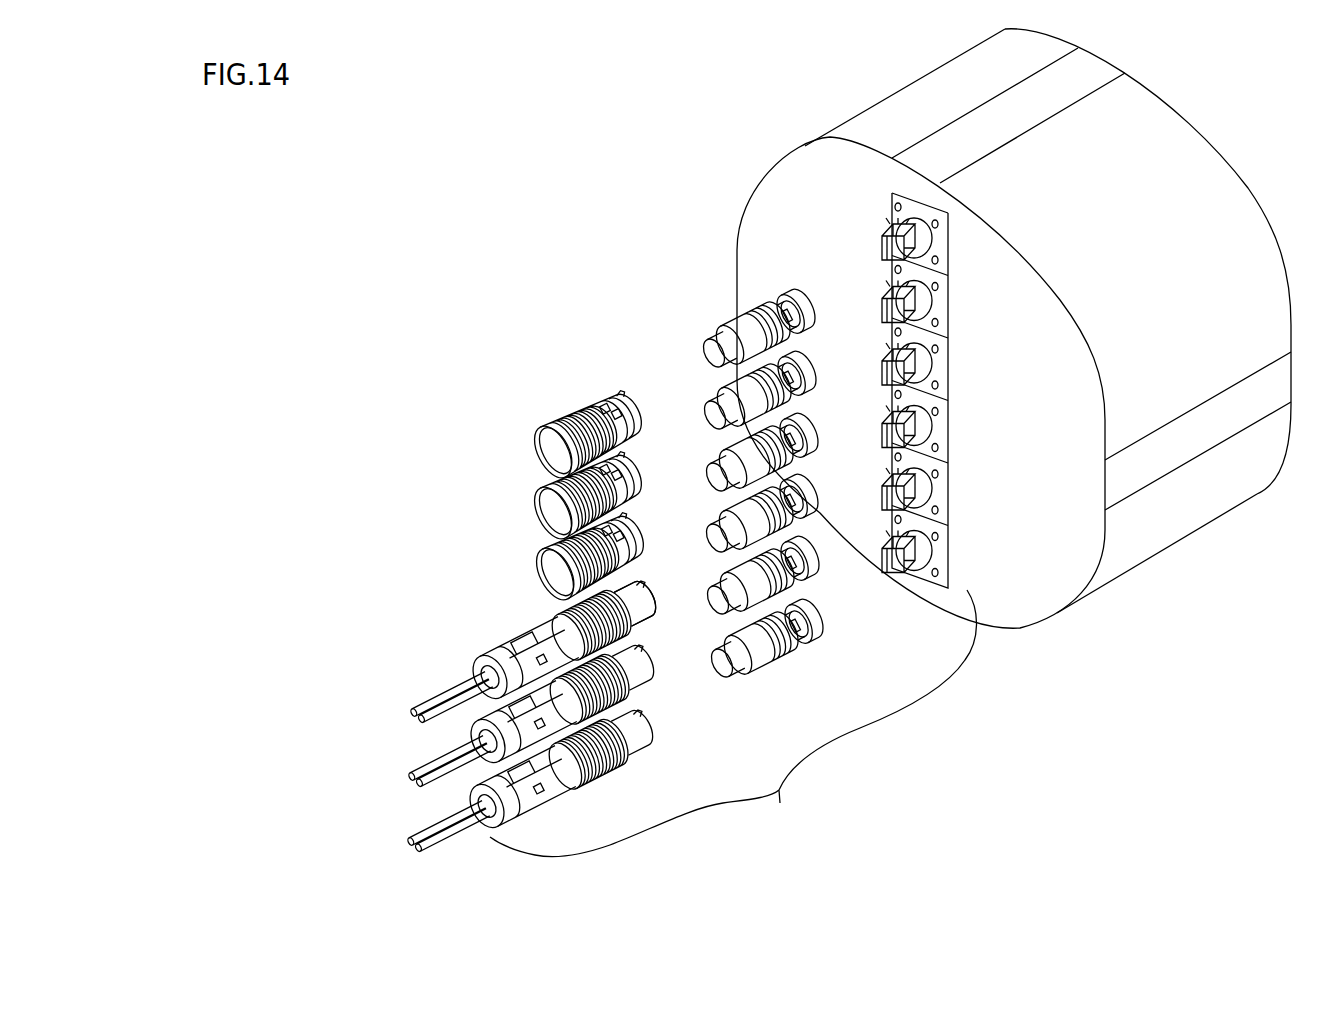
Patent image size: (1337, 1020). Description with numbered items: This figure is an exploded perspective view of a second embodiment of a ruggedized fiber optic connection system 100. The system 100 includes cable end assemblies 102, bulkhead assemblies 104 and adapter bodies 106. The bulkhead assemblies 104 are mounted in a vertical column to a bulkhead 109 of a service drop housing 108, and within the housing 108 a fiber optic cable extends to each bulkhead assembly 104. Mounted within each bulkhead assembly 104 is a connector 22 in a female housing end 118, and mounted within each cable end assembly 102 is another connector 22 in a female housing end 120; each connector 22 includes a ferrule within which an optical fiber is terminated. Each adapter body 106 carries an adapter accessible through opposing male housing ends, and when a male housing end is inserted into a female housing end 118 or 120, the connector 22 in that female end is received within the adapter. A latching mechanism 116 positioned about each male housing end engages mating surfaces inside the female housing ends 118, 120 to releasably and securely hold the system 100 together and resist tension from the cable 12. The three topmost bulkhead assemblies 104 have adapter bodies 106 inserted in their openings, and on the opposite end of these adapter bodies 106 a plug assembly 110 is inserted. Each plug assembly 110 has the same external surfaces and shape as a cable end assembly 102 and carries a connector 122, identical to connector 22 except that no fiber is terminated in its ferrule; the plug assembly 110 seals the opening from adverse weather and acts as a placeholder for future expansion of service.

The cable 12 is at (438, 828).
The connector 22 is at (883, 552).
The ruggedized fiber optic connection system 100 is at (733, 723).
The cable end assembly 102 is at (567, 777).
The bulkhead assembly 104 is at (946, 573).
The adapter body 106 is at (787, 642).
The service drop housing 108 is at (1143, 543).
The bulkhead 109 is at (1022, 473).
The plug assembly 110 is at (539, 573).
The latching mechanism 116 is at (743, 662).
The female housing end 118 is at (889, 538).
The female housing end 120 is at (642, 730).
The connector 122 is at (641, 524).